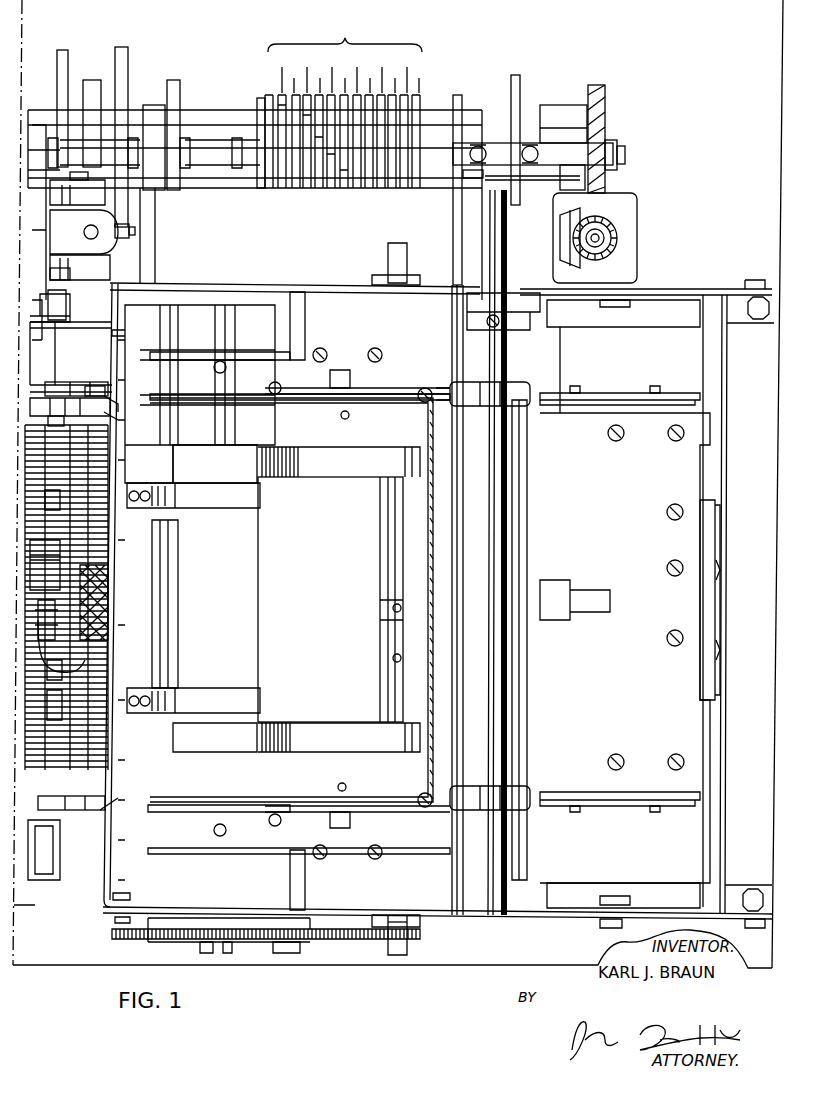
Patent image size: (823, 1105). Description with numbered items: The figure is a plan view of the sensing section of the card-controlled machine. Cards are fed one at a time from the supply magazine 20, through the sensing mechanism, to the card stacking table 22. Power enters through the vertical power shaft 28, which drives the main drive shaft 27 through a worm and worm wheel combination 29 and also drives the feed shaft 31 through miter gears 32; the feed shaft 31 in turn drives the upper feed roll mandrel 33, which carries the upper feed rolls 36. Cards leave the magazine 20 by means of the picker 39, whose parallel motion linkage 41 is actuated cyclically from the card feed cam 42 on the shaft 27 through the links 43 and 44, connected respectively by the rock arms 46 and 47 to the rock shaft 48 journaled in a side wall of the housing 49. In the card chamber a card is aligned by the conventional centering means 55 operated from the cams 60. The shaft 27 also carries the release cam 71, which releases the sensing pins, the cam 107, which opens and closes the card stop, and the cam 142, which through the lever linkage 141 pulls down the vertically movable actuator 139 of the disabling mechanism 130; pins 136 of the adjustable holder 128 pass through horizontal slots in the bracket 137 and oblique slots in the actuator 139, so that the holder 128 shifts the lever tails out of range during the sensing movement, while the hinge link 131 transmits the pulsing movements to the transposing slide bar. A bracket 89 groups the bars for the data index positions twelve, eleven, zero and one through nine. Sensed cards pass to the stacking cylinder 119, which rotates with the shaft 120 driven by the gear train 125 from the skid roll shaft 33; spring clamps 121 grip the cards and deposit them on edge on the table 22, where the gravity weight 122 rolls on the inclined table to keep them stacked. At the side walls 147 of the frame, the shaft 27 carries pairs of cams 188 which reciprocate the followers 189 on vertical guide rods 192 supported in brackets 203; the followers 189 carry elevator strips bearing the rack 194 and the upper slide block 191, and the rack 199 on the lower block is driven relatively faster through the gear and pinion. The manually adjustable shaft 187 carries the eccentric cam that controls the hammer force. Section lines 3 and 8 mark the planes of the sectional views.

The followers 189 is at (60, 140).
The cams 188 is at (120, 58).
The cam 142 is at (173, 90).
The cam 107 is at (265, 105).
The main drive shaft 27 is at (205, 130).
The key bars 89 is at (343, 104).
The release cam 71 is at (458, 93).
The card feed cam 42 is at (515, 74).
The link 43 is at (566, 150).
The worm and worm wheel combination 29 is at (606, 122).
The rock arm 46 is at (492, 152).
The rock shaft 48 is at (488, 219).
The housing 49 is at (445, 284).
The feed shaft 31 is at (600, 230).
The miter gears 32 is at (605, 236).
The vertical power shaft 28 is at (605, 242).
The rack 199 is at (98, 185).
The rack 194 is at (52, 268).
The vertical guide rods 192 is at (84, 235).
The brackets 203 is at (130, 233).
The upper slide block 191 is at (112, 254).
The lever linkage 141 is at (77, 311).
The upper feed roll mandrel 33 is at (292, 290).
The cams 60 is at (255, 352).
The centering means 55 is at (349, 380).
The pins 136 is at (95, 838).
The actuator 139 is at (78, 382).
The disabling mechanism 130 is at (98, 384).
The adjustable holder 128 is at (90, 408).
The bracket 137 is at (108, 800).
The shaft 120 is at (210, 410).
The stacking cylinder 119 is at (182, 490).
The gravity weight 122 is at (354, 486).
The spring clamps 121 is at (155, 497).
The upper feed rolls 36 is at (178, 548).
The rock arm 47 is at (498, 395).
The link 44 is at (595, 392).
The parallel motion linkage 41 is at (600, 401).
The supply magazine 20 is at (625, 604).
The picker 39 is at (708, 578).
The manually adjustable shaft 187 is at (70, 660).
The hinge link 131 is at (103, 745).
The card stacking table 22 is at (291, 600).
The side walls 147 is at (28, 908).
The gear train 125 is at (292, 940).
The section line 8- 8 is at (538, 51).
The section line 3- 3 is at (133, 625).